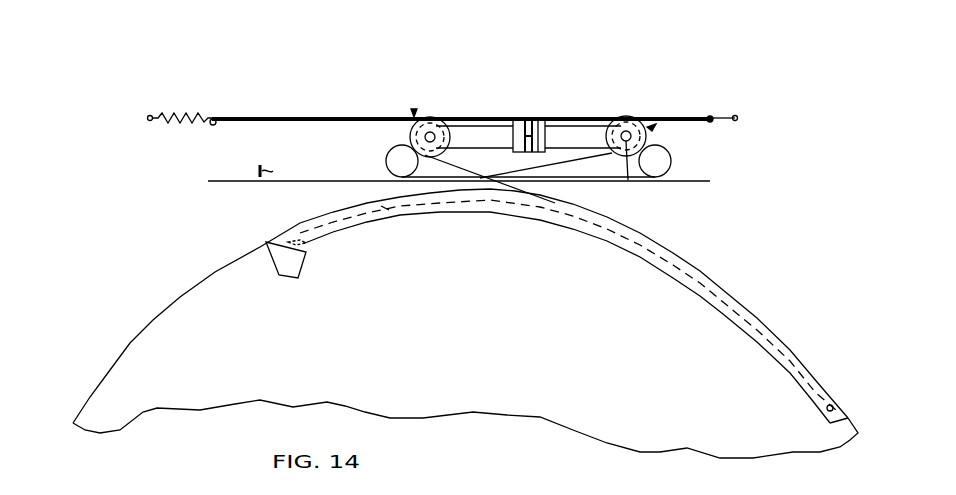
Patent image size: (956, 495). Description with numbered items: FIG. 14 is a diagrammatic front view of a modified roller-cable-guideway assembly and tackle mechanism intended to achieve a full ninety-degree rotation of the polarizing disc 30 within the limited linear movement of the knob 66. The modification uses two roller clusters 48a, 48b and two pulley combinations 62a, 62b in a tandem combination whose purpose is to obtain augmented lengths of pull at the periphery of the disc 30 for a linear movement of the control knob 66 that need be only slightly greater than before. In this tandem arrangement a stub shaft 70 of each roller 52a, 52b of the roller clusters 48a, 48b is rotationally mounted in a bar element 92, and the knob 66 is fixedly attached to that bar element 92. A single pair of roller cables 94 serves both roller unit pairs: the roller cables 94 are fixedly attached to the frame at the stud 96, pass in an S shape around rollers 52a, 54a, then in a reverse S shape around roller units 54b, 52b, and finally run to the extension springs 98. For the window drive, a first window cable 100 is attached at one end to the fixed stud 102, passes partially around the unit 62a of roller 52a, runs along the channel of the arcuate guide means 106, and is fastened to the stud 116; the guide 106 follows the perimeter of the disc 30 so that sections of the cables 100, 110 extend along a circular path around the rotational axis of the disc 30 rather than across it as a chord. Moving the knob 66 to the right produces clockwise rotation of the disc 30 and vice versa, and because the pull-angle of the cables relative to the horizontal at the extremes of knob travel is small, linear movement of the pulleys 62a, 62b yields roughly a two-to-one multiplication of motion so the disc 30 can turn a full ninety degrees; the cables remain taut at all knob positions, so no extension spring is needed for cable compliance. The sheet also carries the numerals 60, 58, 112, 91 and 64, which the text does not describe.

The disc 30 is at (462, 327).
The bar element 92 is at (563, 150).
The first window cable 100 is at (487, 183).
The cable 110 is at (385, 210).
The base plate 60 is at (230, 180).
The lever bar 58 is at (288, 115).
The extension springs 98 is at (172, 112).
The pivot 112 is at (212, 127).
The roller cables 94 is at (255, 123).
The stud 96 is at (738, 116).
The fixed stud 102 is at (712, 116).
The stop 91 is at (278, 170).
The pulley shaft 64 is at (407, 112).
The roller cluster 48b is at (414, 110).
The roller 52b is at (417, 115).
The pulley combination 62b is at (461, 114).
The knob 66 is at (523, 120).
The roller 52a is at (613, 112).
The pulley combination 62a is at (639, 113).
The roller cluster 48a is at (650, 125).
The stub shaft 70 is at (397, 152).
The roller unit 54b is at (407, 178).
The roller 54a is at (660, 177).
The arcuate guide means 106 is at (273, 255).
The stud 116 is at (303, 248).